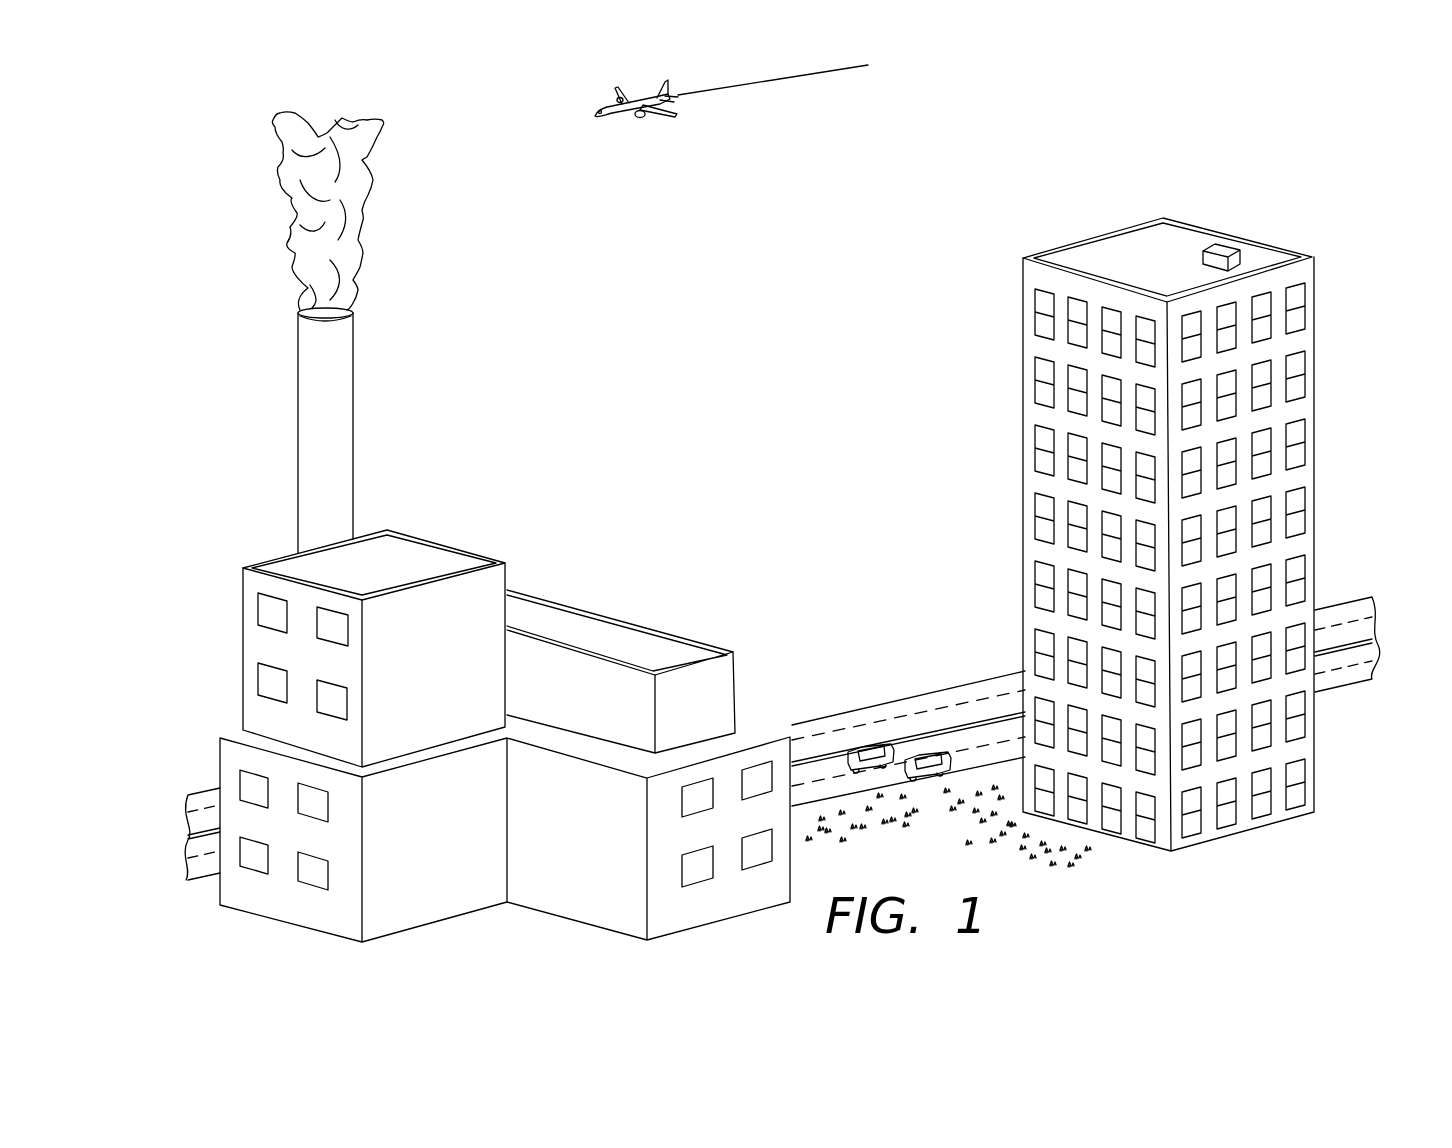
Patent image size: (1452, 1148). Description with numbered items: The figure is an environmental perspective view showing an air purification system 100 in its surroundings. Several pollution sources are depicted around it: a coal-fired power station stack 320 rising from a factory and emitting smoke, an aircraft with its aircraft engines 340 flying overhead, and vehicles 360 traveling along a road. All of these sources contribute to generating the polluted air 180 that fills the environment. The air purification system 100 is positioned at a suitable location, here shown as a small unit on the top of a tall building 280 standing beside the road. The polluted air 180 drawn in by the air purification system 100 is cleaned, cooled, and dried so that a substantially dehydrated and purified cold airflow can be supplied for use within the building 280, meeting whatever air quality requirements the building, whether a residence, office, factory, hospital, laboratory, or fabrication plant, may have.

The air purification system 100 is at (1223, 247).
The polluted air 180 is at (727, 357).
The building 280 is at (1023, 470).
The coal-fired power station stack 320 is at (356, 377).
The aircraft engine 340 is at (612, 117).
The vehicle 360 is at (942, 755).